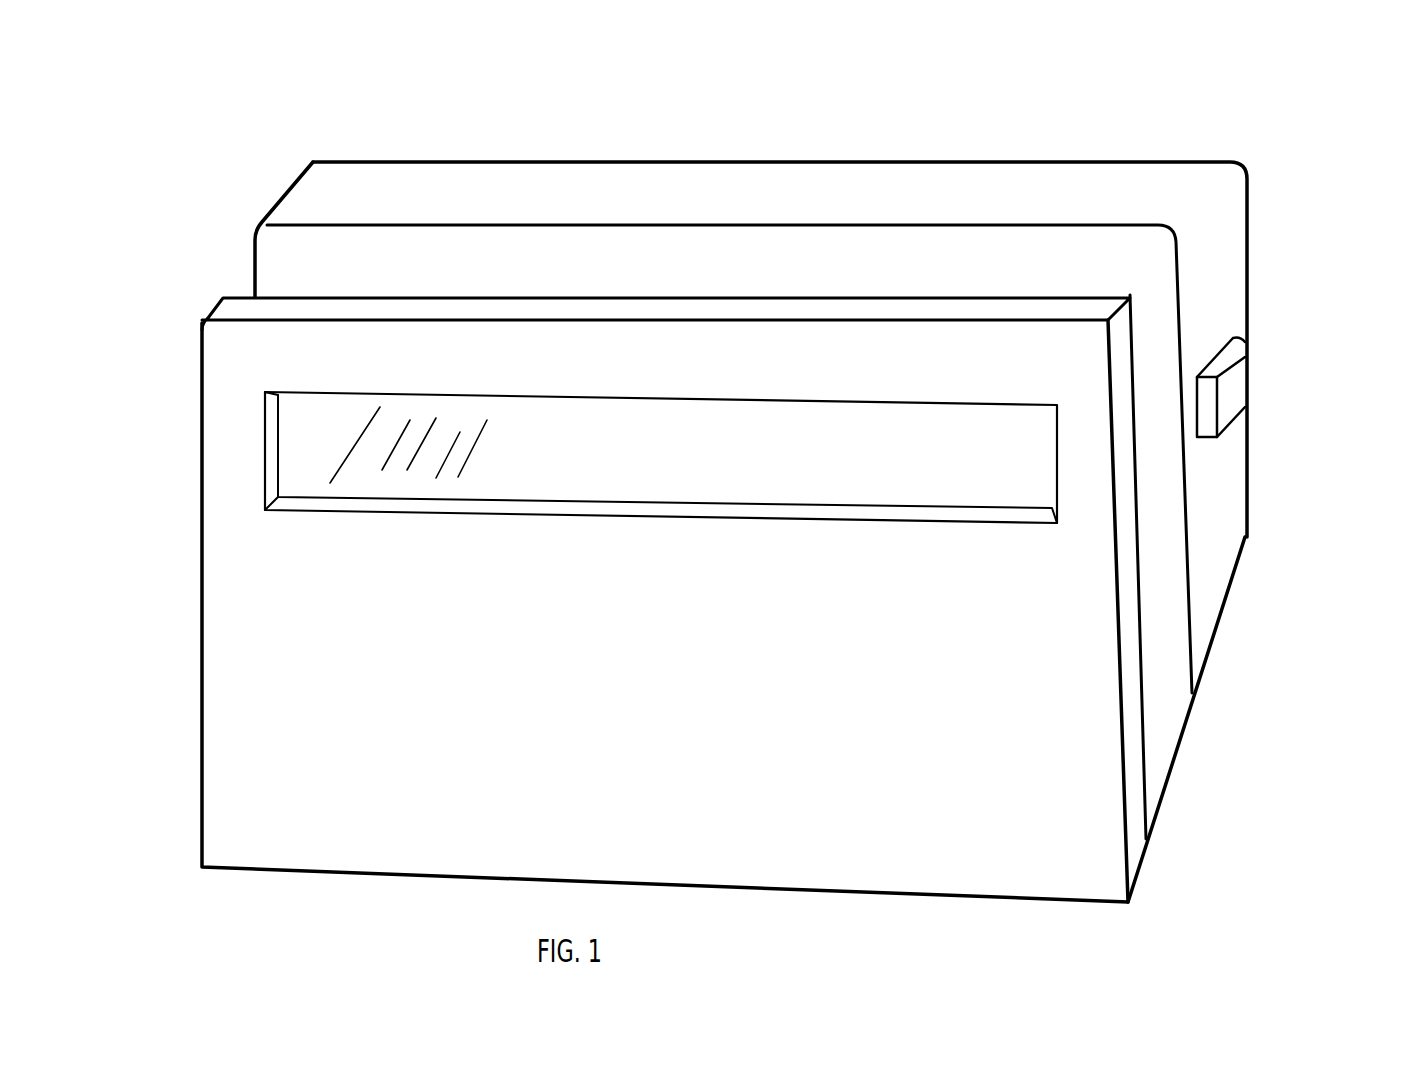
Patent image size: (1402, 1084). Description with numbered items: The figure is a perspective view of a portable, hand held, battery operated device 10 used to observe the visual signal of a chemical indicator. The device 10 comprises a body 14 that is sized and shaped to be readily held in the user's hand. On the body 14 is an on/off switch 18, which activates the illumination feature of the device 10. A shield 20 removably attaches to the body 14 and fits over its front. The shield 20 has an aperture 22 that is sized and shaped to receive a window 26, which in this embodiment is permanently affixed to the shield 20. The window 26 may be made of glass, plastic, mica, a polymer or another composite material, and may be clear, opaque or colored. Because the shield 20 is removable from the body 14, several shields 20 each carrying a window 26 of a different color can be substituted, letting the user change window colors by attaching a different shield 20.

The device 10 is at (216, 140).
The body 14 is at (660, 183).
The on/off switch 18 is at (1250, 363).
The shield 20 is at (272, 638).
The aperture 22 is at (637, 473).
The window 26 is at (320, 412).